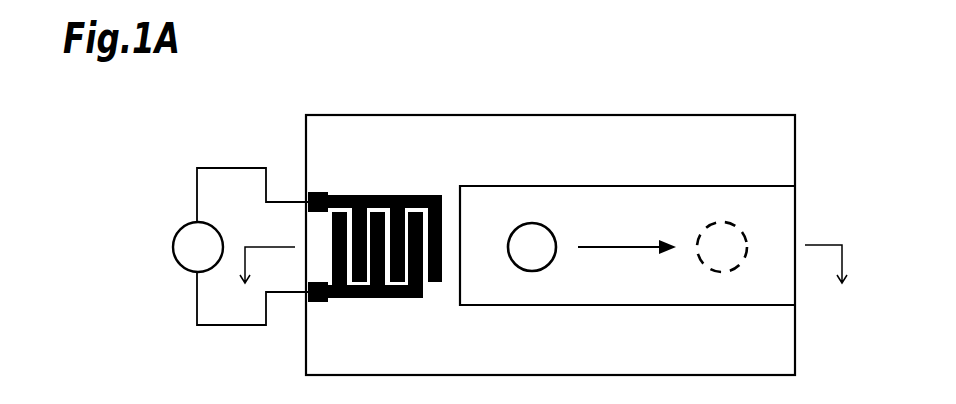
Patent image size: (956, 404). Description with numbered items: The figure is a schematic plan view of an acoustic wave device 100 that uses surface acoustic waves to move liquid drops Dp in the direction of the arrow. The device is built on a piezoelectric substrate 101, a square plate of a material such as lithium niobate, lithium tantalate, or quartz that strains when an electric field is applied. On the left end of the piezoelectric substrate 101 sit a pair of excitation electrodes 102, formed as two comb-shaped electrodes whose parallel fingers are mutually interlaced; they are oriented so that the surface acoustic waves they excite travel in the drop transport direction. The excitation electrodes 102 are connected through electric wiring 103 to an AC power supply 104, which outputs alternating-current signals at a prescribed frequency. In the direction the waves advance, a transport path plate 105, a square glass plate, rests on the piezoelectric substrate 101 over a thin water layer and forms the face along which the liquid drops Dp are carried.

The acoustic wave device 100 is at (578, 99).
The piezoelectric substrate 101 is at (458, 114).
The excitation electrodes 102 is at (396, 179).
The electric wiring 103 is at (225, 167).
The AC power supply 104 is at (172, 247).
The transport path plate 105 is at (650, 186).
The liquid drops Dp is at (533, 271).